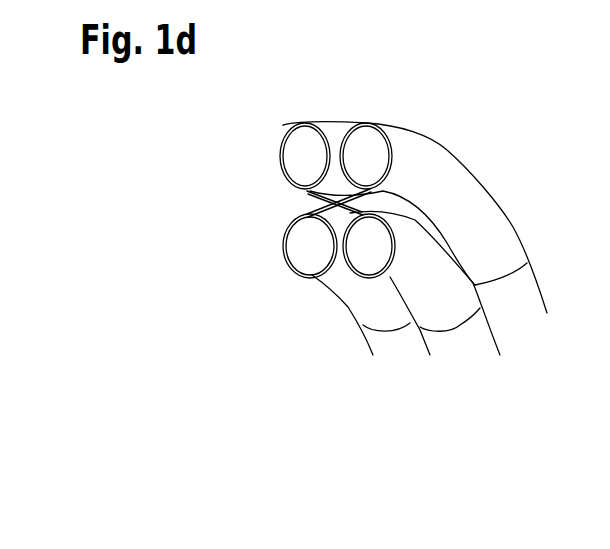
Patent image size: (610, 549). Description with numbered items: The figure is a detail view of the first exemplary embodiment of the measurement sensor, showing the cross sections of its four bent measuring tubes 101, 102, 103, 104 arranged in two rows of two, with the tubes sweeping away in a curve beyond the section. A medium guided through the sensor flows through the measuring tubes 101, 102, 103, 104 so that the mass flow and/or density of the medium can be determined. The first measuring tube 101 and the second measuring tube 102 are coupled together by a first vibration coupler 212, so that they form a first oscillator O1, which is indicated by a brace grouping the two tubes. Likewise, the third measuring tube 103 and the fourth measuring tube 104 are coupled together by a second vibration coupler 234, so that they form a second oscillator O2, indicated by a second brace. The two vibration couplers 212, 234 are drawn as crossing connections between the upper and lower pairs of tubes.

The first measuring tube 101 is at (309, 128).
The second measuring tube 102 is at (345, 248).
The third measuring tube 103 is at (350, 128).
The fourth measuring tube 104 is at (328, 270).
The first vibration coupler 212 is at (315, 196).
The second vibration coupler 234 is at (322, 207).
The first oscillator O1 is at (330, 62).
The second oscillator O2 is at (453, 62).